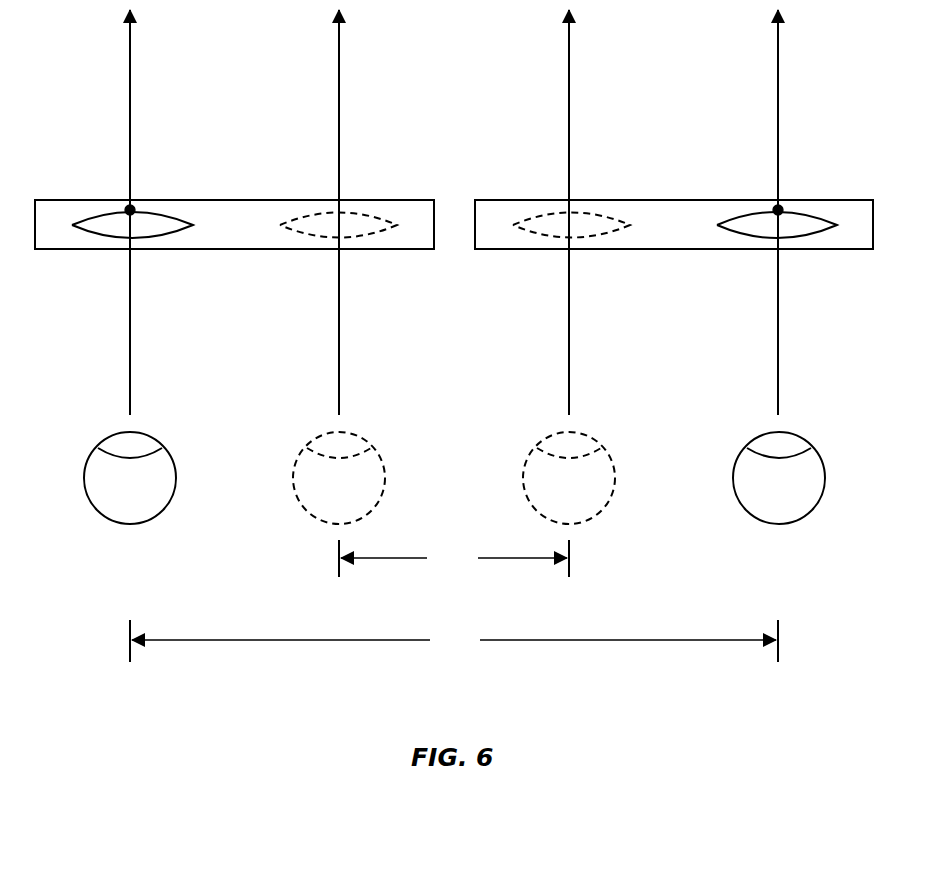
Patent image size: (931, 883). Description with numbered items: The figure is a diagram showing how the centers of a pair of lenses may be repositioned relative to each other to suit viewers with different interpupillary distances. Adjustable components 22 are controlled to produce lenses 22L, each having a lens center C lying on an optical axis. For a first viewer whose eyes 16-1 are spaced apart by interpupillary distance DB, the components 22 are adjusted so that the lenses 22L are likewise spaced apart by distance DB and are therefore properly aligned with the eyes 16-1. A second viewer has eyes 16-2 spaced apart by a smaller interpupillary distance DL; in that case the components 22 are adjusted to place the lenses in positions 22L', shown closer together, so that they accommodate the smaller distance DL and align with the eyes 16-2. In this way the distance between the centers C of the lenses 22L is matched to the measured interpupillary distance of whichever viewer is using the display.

The components 22 is at (43, 250).
The lenses 22L is at (454, 259).
The lens positions 22L' is at (455, 260).
The lens centers C is at (134, 207).
The eyes 16-1 is at (110, 522).
The eyes 16-2 is at (527, 458).
The interpupillary distance DL is at (454, 558).
The interpupillary distance DB is at (454, 641).